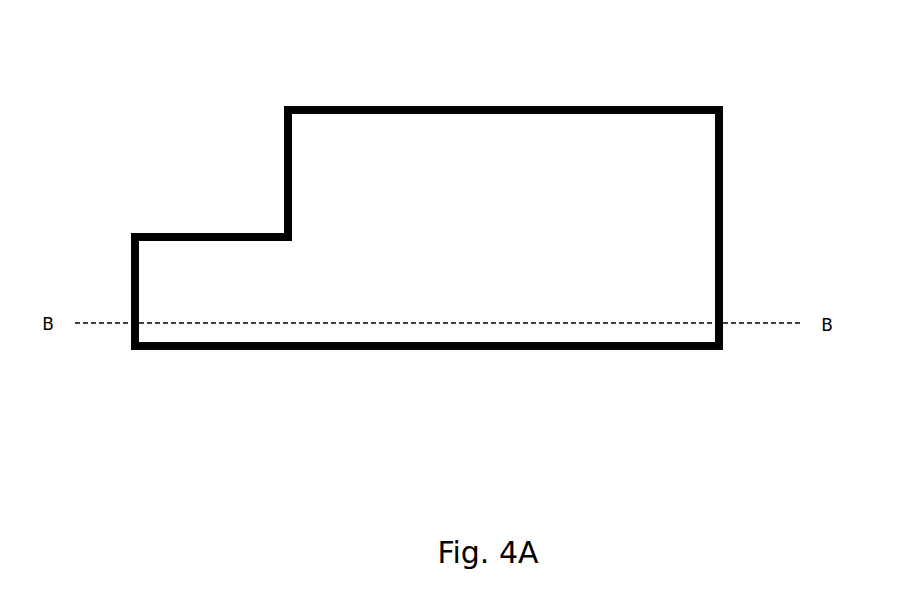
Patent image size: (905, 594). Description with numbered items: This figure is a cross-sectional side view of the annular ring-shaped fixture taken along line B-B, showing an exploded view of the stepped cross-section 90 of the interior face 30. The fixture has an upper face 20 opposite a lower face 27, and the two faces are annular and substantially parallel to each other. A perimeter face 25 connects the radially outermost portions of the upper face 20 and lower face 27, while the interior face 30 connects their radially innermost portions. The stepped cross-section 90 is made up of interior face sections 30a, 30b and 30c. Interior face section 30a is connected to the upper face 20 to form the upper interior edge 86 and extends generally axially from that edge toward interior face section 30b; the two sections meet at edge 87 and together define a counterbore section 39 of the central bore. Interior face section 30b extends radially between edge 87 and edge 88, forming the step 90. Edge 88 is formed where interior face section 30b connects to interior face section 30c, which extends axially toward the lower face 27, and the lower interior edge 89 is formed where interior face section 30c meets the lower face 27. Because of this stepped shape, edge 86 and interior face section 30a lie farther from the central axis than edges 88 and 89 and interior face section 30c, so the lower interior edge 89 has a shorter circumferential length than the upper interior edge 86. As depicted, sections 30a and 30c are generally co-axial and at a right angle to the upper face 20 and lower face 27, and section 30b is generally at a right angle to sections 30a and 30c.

The upper face 20 is at (699, 105).
The perimeter face 25 is at (726, 242).
The lower face 27 is at (359, 351).
The interior face 30 is at (252, 203).
The interior face section 30a is at (285, 131).
The interior face section 30b is at (167, 231).
The interior face section 30c is at (129, 283).
The counterbore section 39 is at (207, 194).
The upper interior edge 86 is at (290, 106).
The edge 87 is at (292, 243).
The edge 88 is at (130, 230).
The lower interior edge 89 is at (137, 350).
The stepped cross-section 90 is at (211, 228).